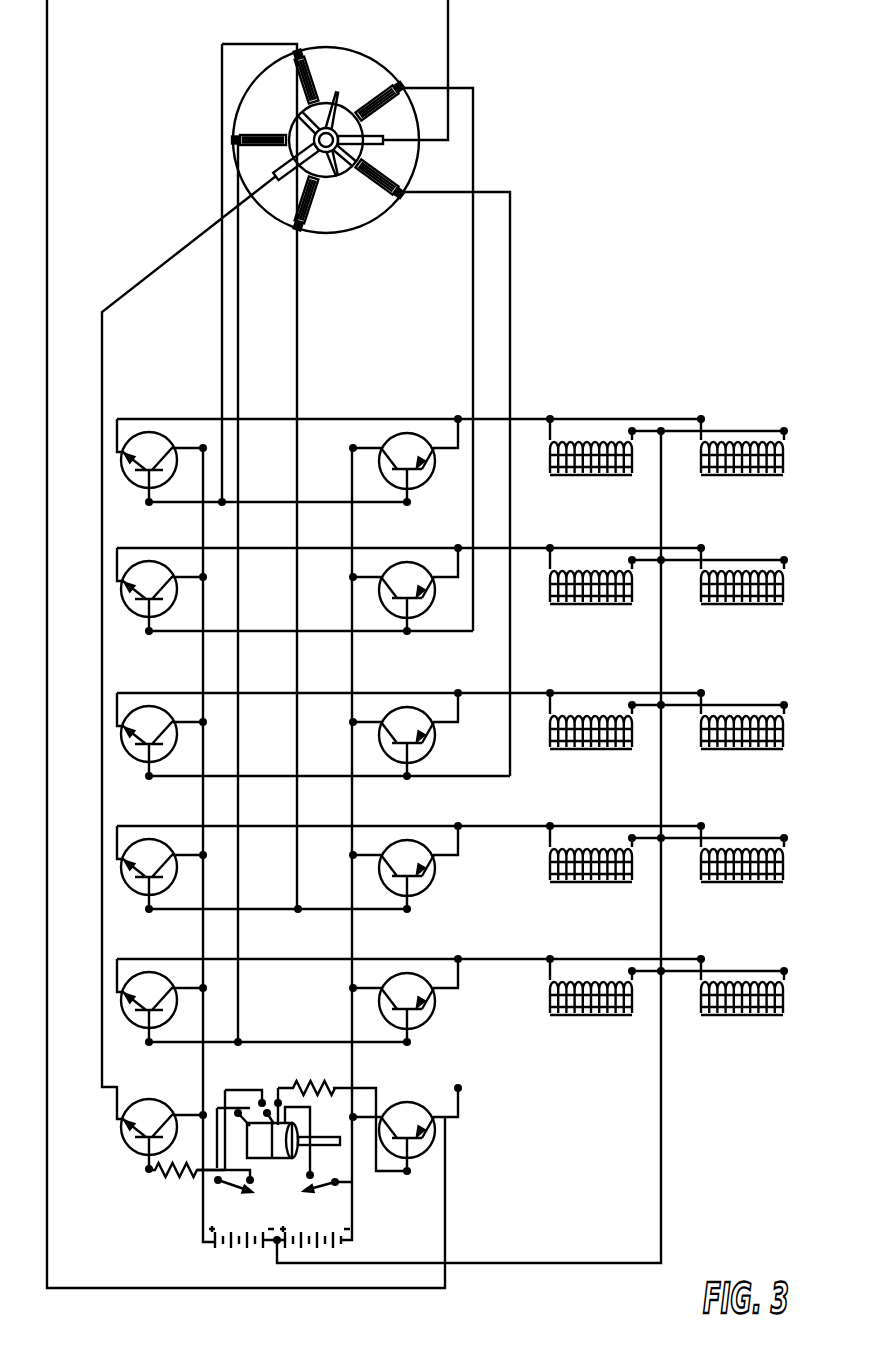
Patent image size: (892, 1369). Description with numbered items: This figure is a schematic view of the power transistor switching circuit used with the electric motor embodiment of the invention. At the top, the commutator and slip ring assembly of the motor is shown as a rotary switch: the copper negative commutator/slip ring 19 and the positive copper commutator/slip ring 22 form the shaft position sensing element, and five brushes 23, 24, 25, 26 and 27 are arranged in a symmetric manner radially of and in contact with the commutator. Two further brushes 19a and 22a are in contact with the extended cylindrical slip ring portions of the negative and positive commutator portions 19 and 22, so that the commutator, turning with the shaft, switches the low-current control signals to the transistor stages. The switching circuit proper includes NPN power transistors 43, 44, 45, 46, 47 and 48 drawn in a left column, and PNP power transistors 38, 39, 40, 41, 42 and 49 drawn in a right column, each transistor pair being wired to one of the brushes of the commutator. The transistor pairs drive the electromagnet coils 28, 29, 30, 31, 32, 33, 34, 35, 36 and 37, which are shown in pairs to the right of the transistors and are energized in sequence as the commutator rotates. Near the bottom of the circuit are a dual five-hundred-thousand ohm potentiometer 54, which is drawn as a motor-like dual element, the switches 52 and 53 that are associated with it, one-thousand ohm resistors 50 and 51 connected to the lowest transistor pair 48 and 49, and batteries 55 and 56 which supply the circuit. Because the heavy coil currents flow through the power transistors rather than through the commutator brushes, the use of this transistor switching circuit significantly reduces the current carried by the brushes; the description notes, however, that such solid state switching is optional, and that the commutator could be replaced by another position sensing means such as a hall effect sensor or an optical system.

The negative commutator/slip ring 19 is at (302, 118).
The brush 19a is at (383, 134).
The positive commutator/slip ring 22 is at (338, 95).
The brush 22a is at (276, 165).
The brush 23 is at (255, 133).
The brush 24 is at (315, 72).
The brush 25 is at (393, 110).
The brush 26 is at (368, 190).
The brush 27 is at (317, 204).
The electromagnet coil 28 is at (563, 475).
The electromagnet coil 29 is at (714, 475).
The electromagnet coil 30 is at (563, 604).
The electromagnet coil 31 is at (714, 604).
The electromagnet coil 32 is at (563, 749).
The electromagnet coil 33 is at (714, 749).
The electromagnet coil 34 is at (563, 882).
The electromagnet coil 35 is at (714, 882).
The electromagnet coil 36 is at (563, 1015).
The electromagnet coil 37 is at (714, 1015).
The PNP power transistor 38 is at (411, 433).
The PNP power transistor 39 is at (411, 562).
The PNP power transistor 40 is at (411, 707).
The PNP power transistor 41 is at (411, 840).
The PNP power transistor 42 is at (411, 973).
The NPN power transistor 43 is at (152, 432).
The NPN power transistor 44 is at (152, 561).
The NPN power transistor 45 is at (152, 706).
The NPN power transistor 46 is at (152, 839).
The NPN power transistor 47 is at (152, 972).
The NPN power transistor 48 is at (152, 1099).
The PNP power transistor 49 is at (411, 1102).
The resistor 50 is at (318, 1084).
The resistor 51 is at (170, 1175).
The switch 52 is at (232, 1184).
The switch 53 is at (323, 1188).
The dual potentiometer 54 is at (283, 1160).
The battery 55 is at (250, 1248).
The battery 56 is at (322, 1253).